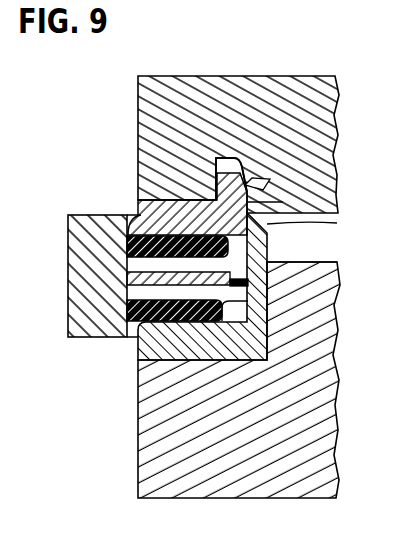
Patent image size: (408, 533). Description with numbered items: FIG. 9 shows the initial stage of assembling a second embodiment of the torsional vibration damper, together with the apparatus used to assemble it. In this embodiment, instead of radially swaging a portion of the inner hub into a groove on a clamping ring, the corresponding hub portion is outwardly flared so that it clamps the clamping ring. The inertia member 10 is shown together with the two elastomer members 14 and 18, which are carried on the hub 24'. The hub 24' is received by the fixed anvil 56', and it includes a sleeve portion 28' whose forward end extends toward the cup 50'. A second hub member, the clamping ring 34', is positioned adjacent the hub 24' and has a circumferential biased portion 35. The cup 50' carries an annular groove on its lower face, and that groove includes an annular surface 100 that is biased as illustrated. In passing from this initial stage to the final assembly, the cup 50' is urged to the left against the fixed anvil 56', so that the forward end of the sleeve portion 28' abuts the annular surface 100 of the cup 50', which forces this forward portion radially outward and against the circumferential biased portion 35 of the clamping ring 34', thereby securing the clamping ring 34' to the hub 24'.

The inertia member 10 is at (82, 276).
The elastomer member 14 is at (128, 243).
The elastomer member 18 is at (128, 316).
The hub 24' is at (179, 285).
The sleeve portion 28' is at (324, 239).
The clamping ring 34' is at (154, 191).
The circumferential biased portion 35 is at (218, 157).
The cup 50' is at (238, 124).
The anvil 56' is at (216, 380).
The annular surface 100 is at (263, 187).